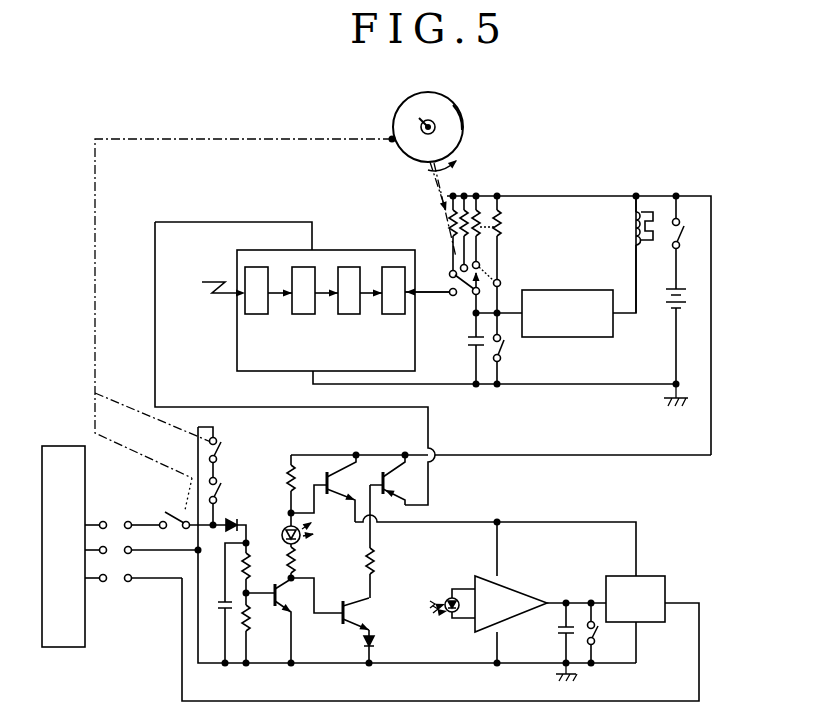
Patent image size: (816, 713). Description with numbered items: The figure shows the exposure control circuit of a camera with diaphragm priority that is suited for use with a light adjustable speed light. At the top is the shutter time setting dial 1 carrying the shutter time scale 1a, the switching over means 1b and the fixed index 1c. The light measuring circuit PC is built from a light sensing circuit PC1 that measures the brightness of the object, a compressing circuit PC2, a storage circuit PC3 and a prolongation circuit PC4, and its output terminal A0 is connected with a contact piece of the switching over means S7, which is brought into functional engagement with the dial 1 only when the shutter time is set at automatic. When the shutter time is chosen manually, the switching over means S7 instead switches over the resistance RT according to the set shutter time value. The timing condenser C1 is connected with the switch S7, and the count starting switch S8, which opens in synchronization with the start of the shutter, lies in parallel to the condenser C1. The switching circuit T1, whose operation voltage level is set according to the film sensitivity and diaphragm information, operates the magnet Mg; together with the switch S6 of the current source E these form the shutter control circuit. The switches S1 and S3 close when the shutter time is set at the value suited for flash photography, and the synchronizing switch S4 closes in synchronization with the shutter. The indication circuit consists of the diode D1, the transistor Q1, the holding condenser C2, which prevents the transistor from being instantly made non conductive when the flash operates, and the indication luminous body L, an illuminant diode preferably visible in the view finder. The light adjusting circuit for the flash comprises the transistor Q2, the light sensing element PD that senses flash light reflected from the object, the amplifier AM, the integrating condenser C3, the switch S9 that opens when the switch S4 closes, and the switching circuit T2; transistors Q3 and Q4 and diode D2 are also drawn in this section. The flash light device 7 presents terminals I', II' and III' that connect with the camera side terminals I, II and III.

The shutter time setting dial 1 is at (458, 98).
The shutter time scale 1a is at (460, 122).
The switching over means 1b is at (390, 136).
The fixed index 1c is at (427, 134).
The flash light device 7 is at (80, 628).
The light measuring circuit PC is at (237, 348).
The light sensing circuit PC1 is at (256, 267).
The compressing circuit PC2 is at (303, 267).
The storage circuit PC3 is at (349, 267).
The prolongation circuit PC4 is at (393, 267).
The resistance RT is at (488, 240).
The output terminal A0 is at (434, 304).
The switching over means S7 is at (478, 292).
The timing condenser C1 is at (468, 349).
The count starting switch S8 is at (508, 337).
The switching circuit T1 is at (556, 266).
The magnet Mg is at (630, 253).
The current source switch S6 is at (688, 241).
The current source E is at (669, 347).
The camera side terminal I is at (141, 511).
The flash light device terminal I' is at (97, 511).
The camera side terminal II is at (163, 542).
The flash light device terminal II' is at (103, 542).
The camera side terminal III is at (153, 592).
The flash light device terminal III' is at (101, 592).
The switch S1 is at (193, 507).
The switch S3 is at (226, 458).
The synchronizing switch S4 is at (226, 503).
The diode D1 is at (238, 524).
The holding condenser C2 is at (224, 603).
The indication luminous body L is at (292, 532).
The transistor Q1 is at (280, 623).
The transistor Q2 is at (341, 488).
The transistor Q3 is at (369, 615).
The transistor Q4 is at (398, 480).
The diode D2 is at (381, 648).
The light sensing element PD is at (447, 597).
The amplifier AM is at (540, 604).
The integrating condenser C3 is at (559, 641).
The switch S9 is at (602, 633).
The switching circuit T2 is at (635, 599).